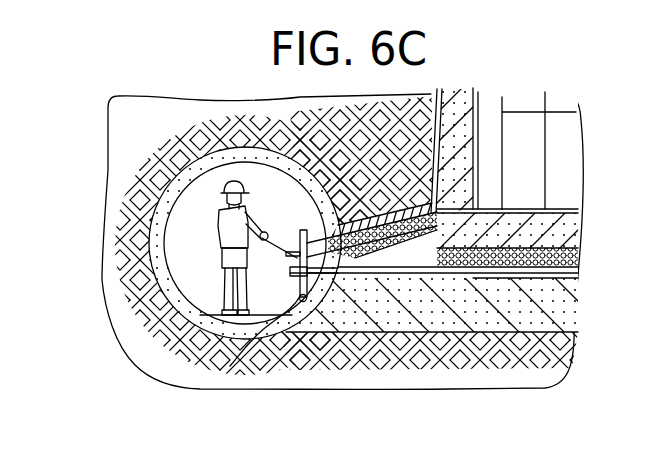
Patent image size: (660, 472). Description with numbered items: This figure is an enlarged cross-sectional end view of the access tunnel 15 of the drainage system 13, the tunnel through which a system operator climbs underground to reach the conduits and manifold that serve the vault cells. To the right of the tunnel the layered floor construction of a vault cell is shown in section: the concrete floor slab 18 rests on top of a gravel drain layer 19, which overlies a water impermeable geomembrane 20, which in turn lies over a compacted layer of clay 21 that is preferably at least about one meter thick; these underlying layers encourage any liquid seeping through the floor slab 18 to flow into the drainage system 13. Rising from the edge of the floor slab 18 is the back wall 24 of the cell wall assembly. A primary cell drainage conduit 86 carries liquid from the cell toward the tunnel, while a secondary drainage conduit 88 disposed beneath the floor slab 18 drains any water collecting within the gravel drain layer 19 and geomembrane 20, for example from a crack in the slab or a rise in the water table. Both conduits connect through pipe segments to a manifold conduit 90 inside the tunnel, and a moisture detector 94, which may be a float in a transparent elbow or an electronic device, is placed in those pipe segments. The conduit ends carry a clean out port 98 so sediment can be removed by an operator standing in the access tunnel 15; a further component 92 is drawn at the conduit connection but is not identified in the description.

The drainage system 13 is at (203, 86).
The access tunnel 15 is at (172, 180).
The floor slab 18 is at (567, 233).
The gravel drain layer 19 is at (566, 261).
The geomembrane 20 is at (568, 278).
The compacted layer of clay 21 is at (558, 308).
The back wall 24 is at (450, 138).
The primary cell drainage conduit 86 is at (322, 242).
The secondary drainage conduit 88 is at (320, 302).
The manifold conduit 90 is at (243, 342).
The bracket 92 is at (299, 247).
The moisture detector 94 is at (221, 243).
The clean out port 98 is at (290, 271).